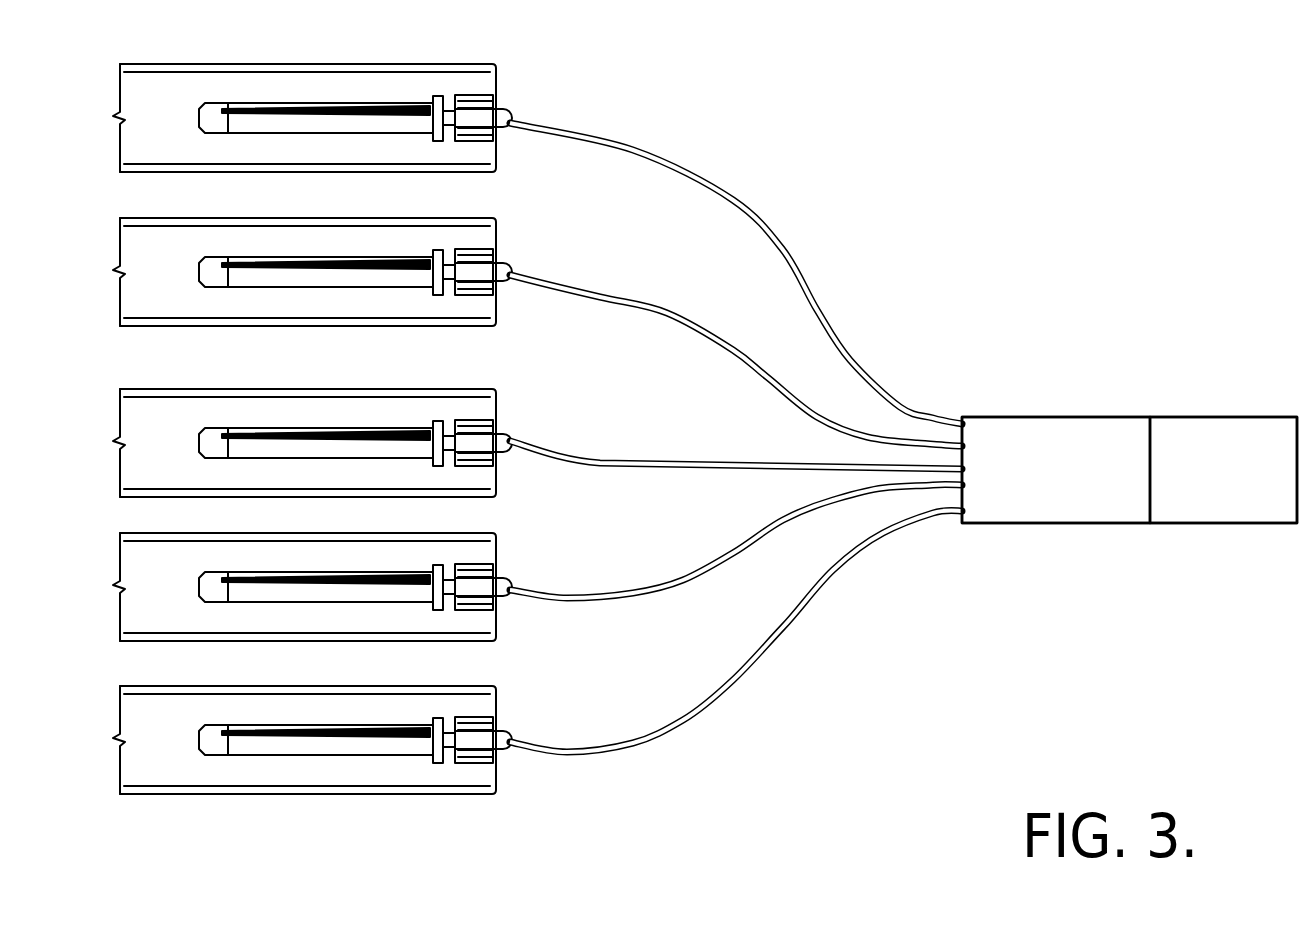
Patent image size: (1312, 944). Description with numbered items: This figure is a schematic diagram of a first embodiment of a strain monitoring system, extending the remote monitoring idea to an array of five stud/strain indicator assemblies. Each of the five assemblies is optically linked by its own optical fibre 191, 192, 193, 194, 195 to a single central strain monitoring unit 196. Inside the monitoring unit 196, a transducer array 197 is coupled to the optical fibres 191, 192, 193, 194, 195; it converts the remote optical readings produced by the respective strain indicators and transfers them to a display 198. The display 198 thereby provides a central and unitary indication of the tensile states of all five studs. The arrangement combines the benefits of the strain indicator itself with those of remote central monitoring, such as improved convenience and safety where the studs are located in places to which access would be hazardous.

The optical fibre 191 is at (753, 213).
The optical fibre 192 is at (733, 340).
The optical fibre 193 is at (767, 464).
The optical fibre 194 is at (753, 543).
The optical fibre 195 is at (728, 687).
The central strain monitoring unit 196 is at (1050, 413).
The transducer array 197 is at (1118, 508).
The display 198 is at (1263, 513).